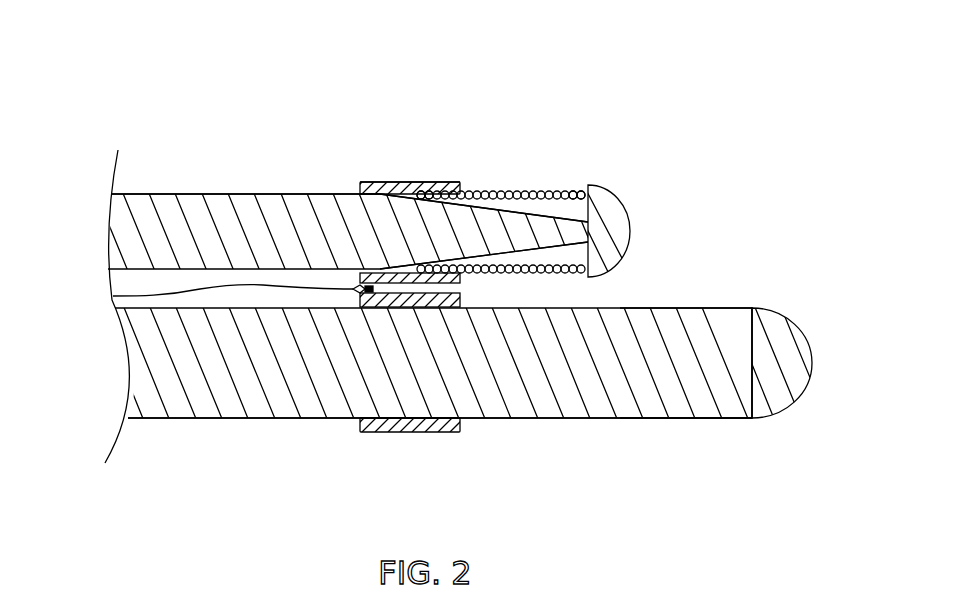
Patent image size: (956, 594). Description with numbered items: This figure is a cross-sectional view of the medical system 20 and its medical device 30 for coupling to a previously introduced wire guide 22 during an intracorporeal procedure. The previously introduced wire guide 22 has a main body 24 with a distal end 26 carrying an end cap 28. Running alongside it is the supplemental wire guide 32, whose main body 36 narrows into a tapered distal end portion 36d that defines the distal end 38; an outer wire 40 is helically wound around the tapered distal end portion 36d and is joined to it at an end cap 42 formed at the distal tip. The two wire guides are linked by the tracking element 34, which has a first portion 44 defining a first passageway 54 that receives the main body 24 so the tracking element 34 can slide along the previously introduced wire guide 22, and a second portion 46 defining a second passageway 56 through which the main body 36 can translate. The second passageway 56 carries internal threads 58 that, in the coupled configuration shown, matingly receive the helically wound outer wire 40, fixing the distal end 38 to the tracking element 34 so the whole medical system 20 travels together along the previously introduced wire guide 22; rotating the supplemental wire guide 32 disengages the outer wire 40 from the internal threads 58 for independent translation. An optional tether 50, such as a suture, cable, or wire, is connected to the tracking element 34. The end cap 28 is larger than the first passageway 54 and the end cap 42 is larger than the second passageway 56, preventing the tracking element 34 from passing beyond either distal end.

The medical system 20 is at (167, 96).
The previously introduced wire guide 22 is at (200, 418).
The main body 24 is at (312, 405).
The distal end 26 is at (708, 403).
The end cap 28 is at (780, 347).
The medical device 30 is at (413, 136).
The supplemental wire guide 32 is at (188, 194).
The tracking element 34 is at (408, 181).
The main body 36 is at (272, 205).
The tapered distal end portion 36d is at (521, 244).
The distal end 38 is at (558, 192).
The outer wire 40 is at (538, 192).
The end cap 42 is at (620, 225).
The first portion 44 is at (435, 431).
The second portion 46 is at (427, 190).
The tether 50 is at (120, 294).
The first passageway 54 is at (455, 417).
The second passageway 56 is at (360, 193).
The internal threads 58 is at (462, 283).